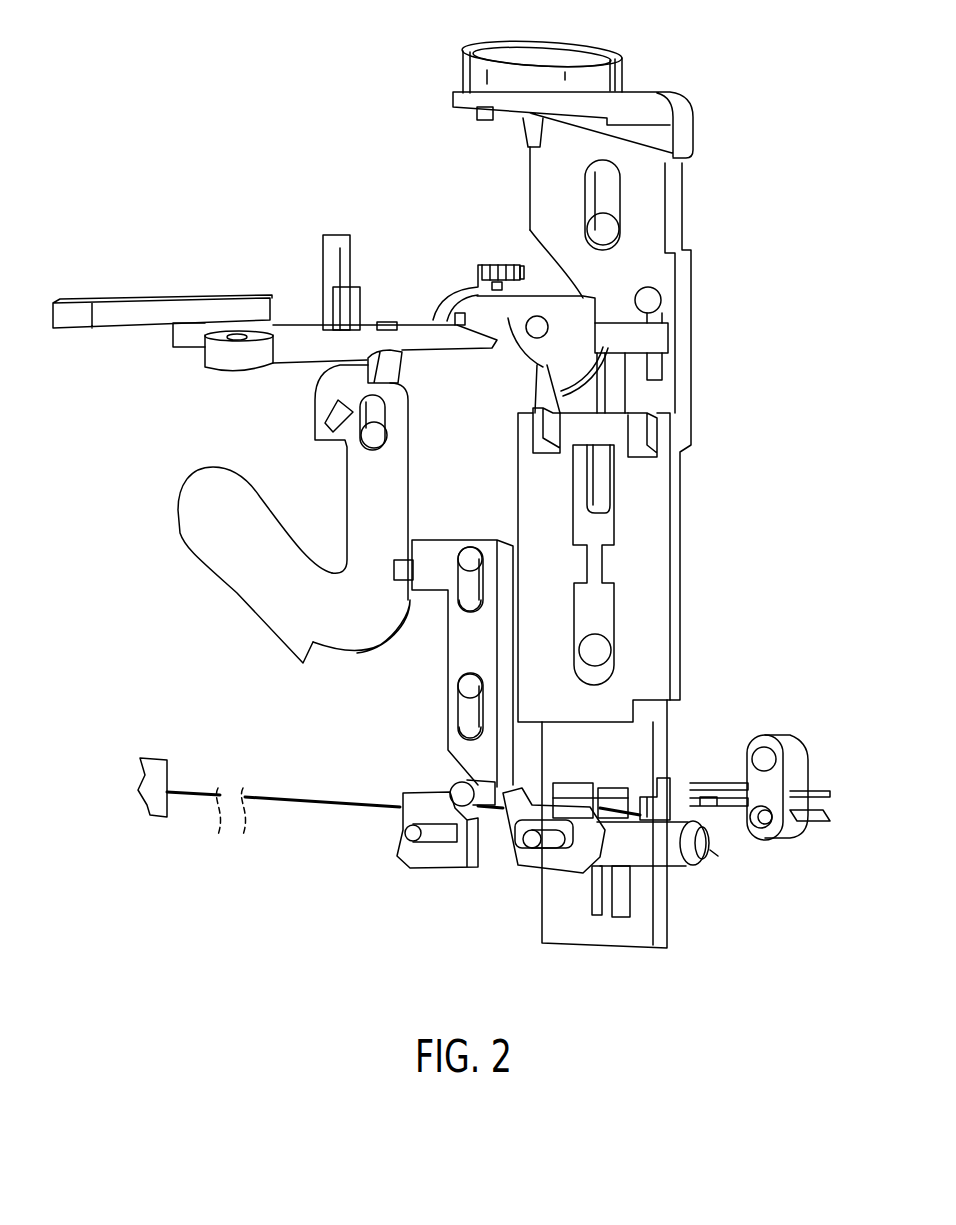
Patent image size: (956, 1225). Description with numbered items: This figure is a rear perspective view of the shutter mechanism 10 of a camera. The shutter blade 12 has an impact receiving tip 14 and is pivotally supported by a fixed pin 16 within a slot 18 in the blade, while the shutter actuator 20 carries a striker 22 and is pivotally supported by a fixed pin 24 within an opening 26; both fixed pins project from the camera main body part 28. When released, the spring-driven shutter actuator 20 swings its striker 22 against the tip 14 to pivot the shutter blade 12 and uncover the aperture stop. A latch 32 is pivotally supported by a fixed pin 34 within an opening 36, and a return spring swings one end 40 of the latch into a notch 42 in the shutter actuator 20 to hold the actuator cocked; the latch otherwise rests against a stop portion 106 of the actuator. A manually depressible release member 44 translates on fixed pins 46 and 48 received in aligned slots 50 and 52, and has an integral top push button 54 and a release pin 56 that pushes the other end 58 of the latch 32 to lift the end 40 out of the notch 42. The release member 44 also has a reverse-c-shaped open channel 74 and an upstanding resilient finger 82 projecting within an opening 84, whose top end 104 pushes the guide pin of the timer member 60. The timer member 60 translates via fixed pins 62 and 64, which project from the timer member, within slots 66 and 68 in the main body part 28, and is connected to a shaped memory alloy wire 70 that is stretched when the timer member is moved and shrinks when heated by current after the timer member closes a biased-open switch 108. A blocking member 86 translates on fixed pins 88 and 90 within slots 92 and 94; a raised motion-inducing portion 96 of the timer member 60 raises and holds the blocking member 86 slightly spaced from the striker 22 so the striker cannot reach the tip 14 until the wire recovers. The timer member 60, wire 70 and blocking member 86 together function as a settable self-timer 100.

The shutter mechanism 10 is at (742, 77).
The shutter blade 12 is at (165, 512).
The impact receiving tip 14 is at (360, 362).
The fixed pin 16 is at (374, 450).
The slot 18 is at (336, 442).
The shutter actuator 20 is at (158, 342).
The striker 22 is at (405, 375).
The fixed pin 24 is at (237, 330).
The opening 26 is at (230, 337).
The camera main body part 28 is at (153, 815).
The latch 32 is at (468, 280).
The fixed pin 34 is at (538, 315).
The opening 36 is at (532, 338).
The end of the latch 40 is at (432, 316).
The notch 42 is at (443, 326).
The release member 44 is at (690, 530).
The fixed pin 46 is at (610, 228).
The fixed pin 48 is at (605, 653).
The slot 50 is at (610, 183).
The slot 52 is at (610, 610).
The top push button 54 is at (478, 44).
The release pin 56 is at (655, 298).
The end of the latch 58 is at (655, 337).
The timer member 60 is at (715, 856).
The fixed pin 62 is at (405, 831).
The fixed pin 64 is at (527, 865).
The slot 66 is at (440, 840).
The slot 68 is at (560, 850).
The shaped memory alloy control 70 is at (283, 798).
The reverse-c-shaped open channel 74 is at (570, 780).
The resilient finger 82 is at (598, 875).
The opening 84 is at (620, 887).
The blocking member 86 is at (443, 684).
The fixed pin 88 is at (470, 562).
The fixed pin 90 is at (468, 683).
The slot 92 is at (463, 607).
The slot 94 is at (470, 722).
The raised motion-inducing portion 96 is at (450, 791).
The settable self-timer 100 is at (280, 868).
The top end of the resilient finger 104 is at (610, 782).
The stop portion 106 is at (472, 287).
The biased-open switch 108 is at (800, 788).